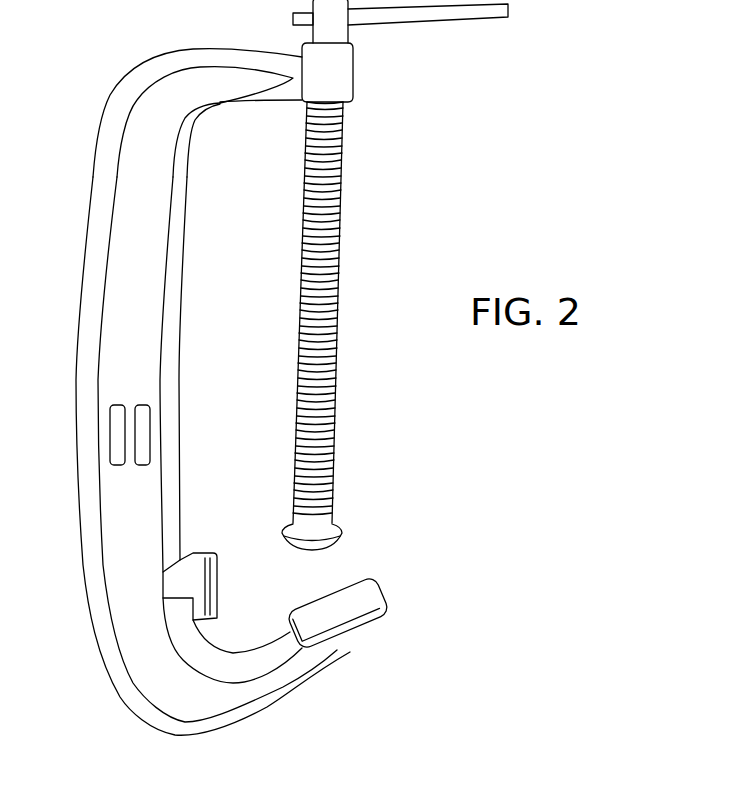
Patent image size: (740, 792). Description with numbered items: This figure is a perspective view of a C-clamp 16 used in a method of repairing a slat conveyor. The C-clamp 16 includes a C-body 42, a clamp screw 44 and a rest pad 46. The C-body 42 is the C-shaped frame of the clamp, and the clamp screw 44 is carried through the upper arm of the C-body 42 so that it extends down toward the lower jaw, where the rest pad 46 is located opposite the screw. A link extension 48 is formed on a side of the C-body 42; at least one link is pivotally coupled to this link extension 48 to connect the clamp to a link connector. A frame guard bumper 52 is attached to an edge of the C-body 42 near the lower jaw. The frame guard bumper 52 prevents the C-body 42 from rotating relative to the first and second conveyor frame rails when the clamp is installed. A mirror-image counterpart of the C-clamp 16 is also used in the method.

The C-clamp 16 is at (402, 453).
The C-body 42 is at (115, 563).
The clamp screw 44 is at (340, 218).
The rest pad 46 is at (345, 617).
The link extension 48 is at (128, 437).
The frame guard bumper 52 is at (193, 553).